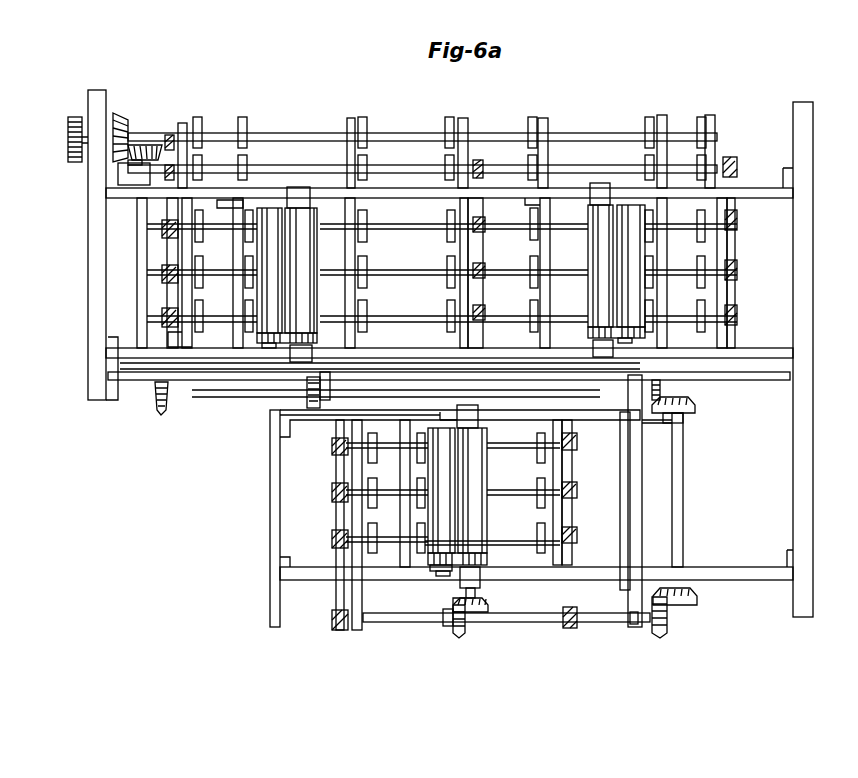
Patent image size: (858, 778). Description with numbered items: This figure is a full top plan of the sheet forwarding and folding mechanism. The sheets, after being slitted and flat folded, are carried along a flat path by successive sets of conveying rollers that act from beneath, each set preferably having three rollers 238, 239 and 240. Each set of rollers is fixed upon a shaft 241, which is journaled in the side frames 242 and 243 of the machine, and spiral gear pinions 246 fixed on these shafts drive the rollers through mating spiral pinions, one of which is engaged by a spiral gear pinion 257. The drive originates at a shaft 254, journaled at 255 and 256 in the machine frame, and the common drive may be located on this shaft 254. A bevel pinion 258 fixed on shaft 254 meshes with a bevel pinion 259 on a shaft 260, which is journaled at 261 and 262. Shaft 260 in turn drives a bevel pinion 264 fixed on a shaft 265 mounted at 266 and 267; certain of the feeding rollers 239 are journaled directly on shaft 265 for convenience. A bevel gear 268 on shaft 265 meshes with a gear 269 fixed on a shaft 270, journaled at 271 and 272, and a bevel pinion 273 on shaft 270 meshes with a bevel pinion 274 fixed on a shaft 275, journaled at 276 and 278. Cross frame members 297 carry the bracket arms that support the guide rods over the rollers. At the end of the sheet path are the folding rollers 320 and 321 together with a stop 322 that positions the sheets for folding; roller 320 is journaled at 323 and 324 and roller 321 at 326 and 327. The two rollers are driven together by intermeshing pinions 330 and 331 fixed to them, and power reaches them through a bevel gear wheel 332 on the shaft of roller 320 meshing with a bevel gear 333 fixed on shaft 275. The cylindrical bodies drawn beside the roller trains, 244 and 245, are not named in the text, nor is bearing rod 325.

The conveying roller 238 is at (535, 122).
The conveying roller 239 is at (448, 118).
The conveying roller 240 is at (368, 146).
The shaft 241 is at (440, 235).
The side frame 242 is at (548, 293).
The side frame 243 is at (367, 225).
The drum 244 is at (287, 274).
The drum 245 is at (616, 270).
The spiral gear pinion 246 is at (498, 247).
The shaft 254 is at (300, 124).
The bearing 255 is at (545, 131).
The bearing 256 is at (92, 100).
The spiral gear pinion 257 is at (490, 133).
The bevel pinion 258 is at (122, 120).
The bevel pinion 259 is at (140, 145).
The shaft 260 is at (137, 262).
The bearing 261 is at (125, 178).
The bearing 262 is at (120, 355).
The bevel pinion 264 is at (158, 410).
The shaft 265 is at (214, 397).
The mounting 266 is at (270, 410).
The mounting 267 is at (628, 396).
The bevel gear 268 is at (662, 386).
The gear 269 is at (695, 405).
The shaft 270 is at (683, 494).
The bearing 271 is at (683, 420).
The bearing 272 is at (690, 578).
The bevel pinion 273 is at (697, 596).
The bevel pinion 274 is at (667, 633).
The shaft 275 is at (592, 618).
The bearing 276 is at (637, 622).
The bearing 278 is at (357, 630).
The cross frame member 297 is at (762, 188).
The folding roller 320 is at (470, 478).
The folding roller 321 is at (432, 462).
The stop 322 is at (383, 554).
The bearing 323 is at (470, 410).
The bearing 324 is at (482, 577).
The bearing rod 325 is at (596, 501).
The bearing 326 is at (432, 420).
The bearing 327 is at (447, 580).
The pinion 330 is at (495, 548).
The pinion 331 is at (430, 572).
The bevel gear wheel 332 is at (488, 612).
The bevel gear 333 is at (460, 633).